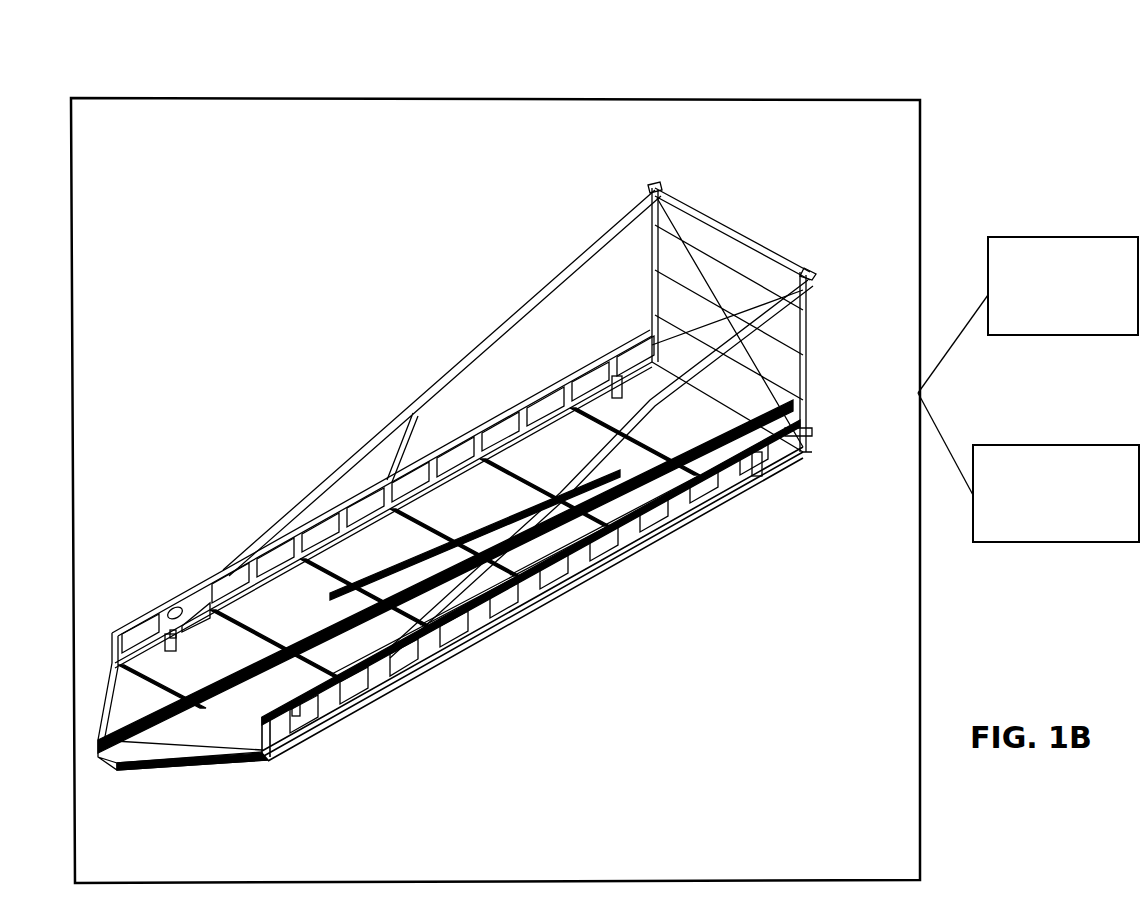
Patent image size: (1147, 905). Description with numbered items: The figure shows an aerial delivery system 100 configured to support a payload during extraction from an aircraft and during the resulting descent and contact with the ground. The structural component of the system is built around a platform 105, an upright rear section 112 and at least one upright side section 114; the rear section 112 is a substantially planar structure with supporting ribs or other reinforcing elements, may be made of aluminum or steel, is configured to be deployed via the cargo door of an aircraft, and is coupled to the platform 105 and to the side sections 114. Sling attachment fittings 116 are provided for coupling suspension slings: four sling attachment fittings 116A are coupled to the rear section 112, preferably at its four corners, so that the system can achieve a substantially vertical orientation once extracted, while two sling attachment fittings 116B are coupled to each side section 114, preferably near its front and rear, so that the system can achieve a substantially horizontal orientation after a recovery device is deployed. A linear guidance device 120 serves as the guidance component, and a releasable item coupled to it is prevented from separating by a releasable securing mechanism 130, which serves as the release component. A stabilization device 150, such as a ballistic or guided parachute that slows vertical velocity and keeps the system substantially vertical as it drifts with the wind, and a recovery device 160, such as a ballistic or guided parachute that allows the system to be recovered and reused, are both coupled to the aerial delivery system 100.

The aerial delivery system 100 is at (936, 98).
The platform 105 is at (246, 766).
The upright rear section 112 is at (746, 236).
The upright side section 114 is at (453, 372).
The sling attachment fitting 116 is at (808, 268).
The sling attachment fitting 116A is at (656, 188).
The sling attachment fitting 116B is at (758, 472).
The linear guidance device 120 is at (122, 735).
The releasable securing mechanism 130 is at (786, 432).
The stabilization device 150 is at (1028, 315).
The recovery device 160 is at (1028, 467).